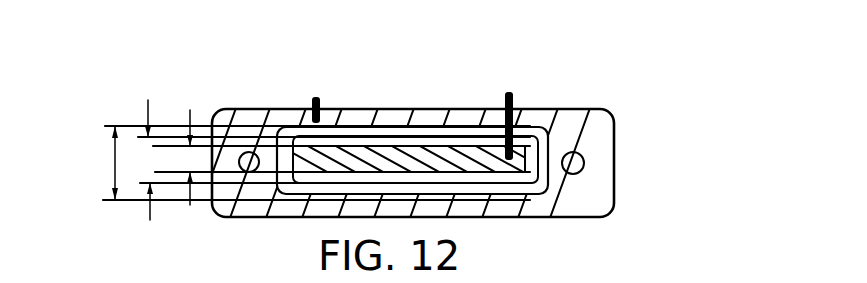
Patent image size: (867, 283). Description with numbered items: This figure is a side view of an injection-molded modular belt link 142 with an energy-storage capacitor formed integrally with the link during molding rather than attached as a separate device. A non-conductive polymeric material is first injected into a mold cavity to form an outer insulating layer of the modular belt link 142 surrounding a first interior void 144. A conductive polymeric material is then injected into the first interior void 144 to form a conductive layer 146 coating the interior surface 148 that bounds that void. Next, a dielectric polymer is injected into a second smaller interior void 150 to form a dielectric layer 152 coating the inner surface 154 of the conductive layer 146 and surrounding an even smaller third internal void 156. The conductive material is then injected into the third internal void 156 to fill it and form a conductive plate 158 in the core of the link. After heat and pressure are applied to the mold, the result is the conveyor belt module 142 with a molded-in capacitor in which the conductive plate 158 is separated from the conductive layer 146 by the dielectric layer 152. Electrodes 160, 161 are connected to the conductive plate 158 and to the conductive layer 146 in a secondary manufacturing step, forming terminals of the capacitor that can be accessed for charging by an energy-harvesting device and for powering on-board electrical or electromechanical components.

The modular belt link 142 is at (588, 218).
The first interior void 144 is at (115, 165).
The conductive layer 146 is at (552, 133).
The interior surface 148 is at (385, 127).
The second smaller interior void 150 is at (148, 117).
The dielectric layer 152 is at (480, 178).
The inner surface 154 is at (317, 183).
The third internal void 156 is at (190, 204).
The conductive plate 158 is at (453, 150).
The electrode 160 is at (313, 100).
The electrode 161 is at (516, 100).